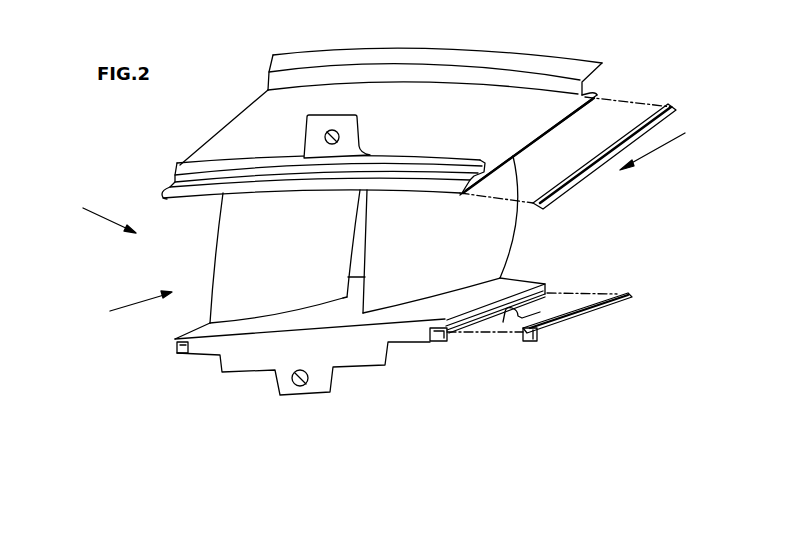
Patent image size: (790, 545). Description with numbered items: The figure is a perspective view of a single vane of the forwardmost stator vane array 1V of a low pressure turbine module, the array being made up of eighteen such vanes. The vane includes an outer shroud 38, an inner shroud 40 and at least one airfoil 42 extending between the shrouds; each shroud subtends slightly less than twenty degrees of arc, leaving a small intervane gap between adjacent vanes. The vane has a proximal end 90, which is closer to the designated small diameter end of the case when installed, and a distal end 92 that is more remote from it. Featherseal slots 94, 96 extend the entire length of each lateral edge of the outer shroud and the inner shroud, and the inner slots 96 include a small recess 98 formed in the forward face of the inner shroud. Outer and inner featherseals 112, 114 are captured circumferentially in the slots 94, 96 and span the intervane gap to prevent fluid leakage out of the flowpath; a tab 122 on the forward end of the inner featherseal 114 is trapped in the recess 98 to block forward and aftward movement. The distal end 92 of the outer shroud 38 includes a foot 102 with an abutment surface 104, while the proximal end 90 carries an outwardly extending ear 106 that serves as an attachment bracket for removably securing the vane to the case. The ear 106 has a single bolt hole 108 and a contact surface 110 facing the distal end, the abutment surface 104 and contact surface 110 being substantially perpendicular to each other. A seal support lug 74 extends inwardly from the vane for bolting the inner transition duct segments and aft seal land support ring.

The outer shroud 38 is at (250, 125).
The inner shroud 40 is at (517, 287).
The airfoil 42 is at (303, 281).
The seal support lug 74 is at (318, 388).
The proximal end 90 is at (124, 308).
The distal end 92 is at (669, 144).
The outer featherseal slot 94 is at (572, 108).
The inner featherseal slot 96 is at (468, 320).
The recess 98 is at (431, 342).
The foot 102 is at (310, 78).
The abutment surface 104 is at (488, 58).
The ear 106 is at (362, 150).
The bolt hole 108 is at (323, 143).
The contact surface 110 is at (332, 113).
The outer featherseal 112 is at (567, 182).
The inner featherseal 114 is at (620, 296).
The tab 122 is at (528, 340).
The first stage vane array 1V is at (96, 210).